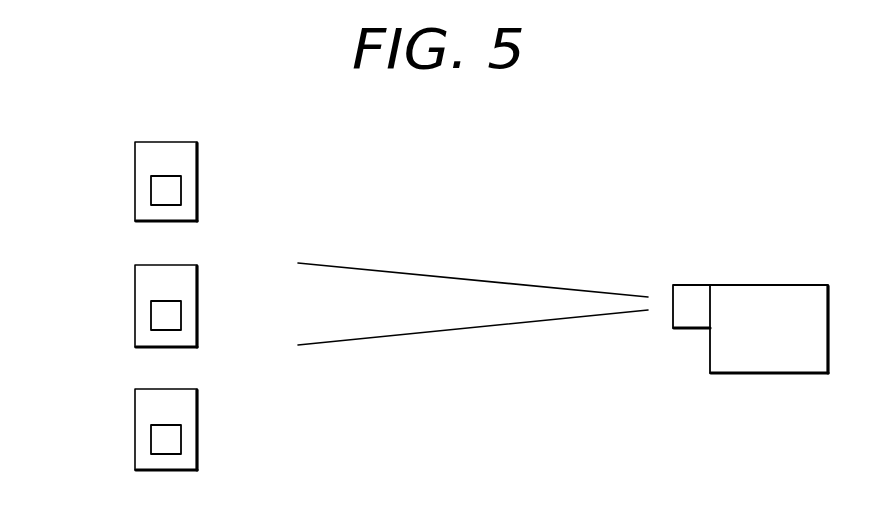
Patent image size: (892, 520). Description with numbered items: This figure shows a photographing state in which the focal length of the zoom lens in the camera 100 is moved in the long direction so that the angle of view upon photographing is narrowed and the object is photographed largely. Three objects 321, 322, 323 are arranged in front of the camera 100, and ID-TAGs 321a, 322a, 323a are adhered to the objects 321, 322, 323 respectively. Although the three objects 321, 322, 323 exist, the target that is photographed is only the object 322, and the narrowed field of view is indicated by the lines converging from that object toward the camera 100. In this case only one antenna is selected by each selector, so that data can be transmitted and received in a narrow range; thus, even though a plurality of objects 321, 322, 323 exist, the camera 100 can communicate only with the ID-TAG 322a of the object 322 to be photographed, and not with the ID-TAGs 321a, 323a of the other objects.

The camera 100 is at (769, 285).
The object 321 is at (175, 141).
The ID-TAG 321a is at (158, 189).
The object 322 is at (175, 264).
The ID-TAG 322a is at (158, 314).
The object 323 is at (175, 388).
The ID-TAG 323a is at (158, 438).